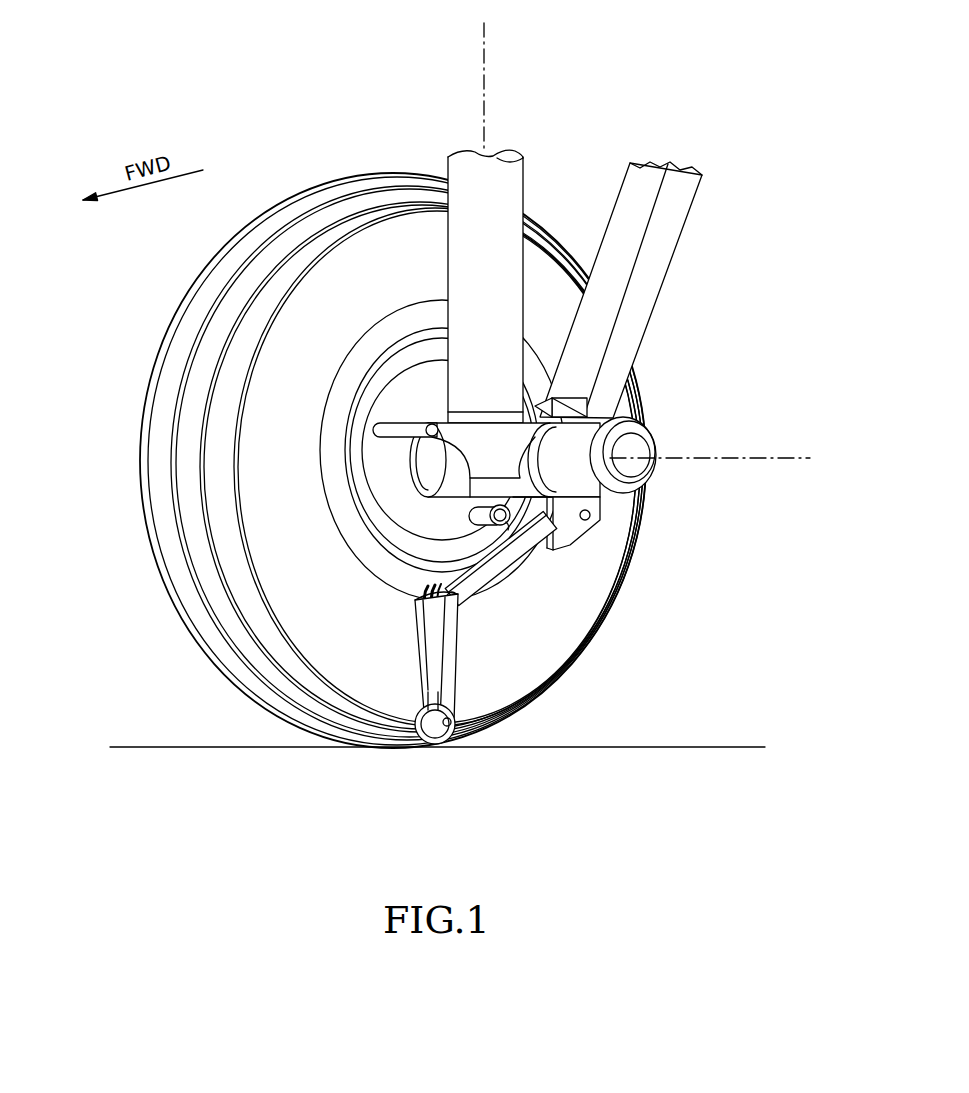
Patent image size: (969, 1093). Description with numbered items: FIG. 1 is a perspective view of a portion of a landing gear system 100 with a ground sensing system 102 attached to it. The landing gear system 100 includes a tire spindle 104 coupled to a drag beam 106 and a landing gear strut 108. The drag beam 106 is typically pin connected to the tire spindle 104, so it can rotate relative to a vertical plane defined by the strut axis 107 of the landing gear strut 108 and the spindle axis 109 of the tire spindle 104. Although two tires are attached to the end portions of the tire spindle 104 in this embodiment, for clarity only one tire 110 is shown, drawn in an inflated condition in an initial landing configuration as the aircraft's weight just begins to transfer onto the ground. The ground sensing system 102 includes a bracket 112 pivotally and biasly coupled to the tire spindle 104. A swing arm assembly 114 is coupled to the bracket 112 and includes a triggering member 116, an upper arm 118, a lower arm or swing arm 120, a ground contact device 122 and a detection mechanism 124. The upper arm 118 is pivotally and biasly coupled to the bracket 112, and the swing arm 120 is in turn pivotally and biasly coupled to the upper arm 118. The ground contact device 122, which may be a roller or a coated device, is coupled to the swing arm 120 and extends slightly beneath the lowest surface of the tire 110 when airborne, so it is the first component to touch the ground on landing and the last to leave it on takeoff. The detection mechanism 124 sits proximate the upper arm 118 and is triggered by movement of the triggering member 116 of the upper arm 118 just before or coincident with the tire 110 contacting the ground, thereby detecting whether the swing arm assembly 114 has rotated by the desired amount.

The landing gear system 100 is at (315, 102).
The ground sensing system 102 is at (593, 540).
The tire spindle 104 is at (587, 417).
The drag beam 106 is at (643, 347).
The strut axis 107 is at (486, 88).
The landing gear strut 108 is at (523, 190).
The spindle axis 109 is at (747, 457).
The tire 110 is at (148, 387).
The bracket 112 is at (570, 543).
The swing arm assembly 114 is at (403, 636).
The triggering member 116 is at (490, 524).
The upper arm 118 is at (497, 580).
The swing arm 120 is at (455, 677).
The ground contact device 122 is at (435, 745).
The detection mechanism 124 is at (478, 515).